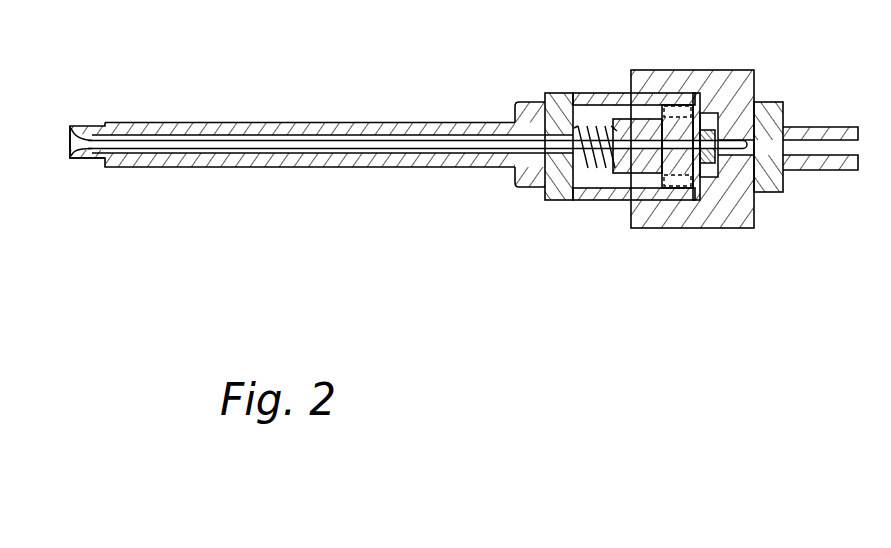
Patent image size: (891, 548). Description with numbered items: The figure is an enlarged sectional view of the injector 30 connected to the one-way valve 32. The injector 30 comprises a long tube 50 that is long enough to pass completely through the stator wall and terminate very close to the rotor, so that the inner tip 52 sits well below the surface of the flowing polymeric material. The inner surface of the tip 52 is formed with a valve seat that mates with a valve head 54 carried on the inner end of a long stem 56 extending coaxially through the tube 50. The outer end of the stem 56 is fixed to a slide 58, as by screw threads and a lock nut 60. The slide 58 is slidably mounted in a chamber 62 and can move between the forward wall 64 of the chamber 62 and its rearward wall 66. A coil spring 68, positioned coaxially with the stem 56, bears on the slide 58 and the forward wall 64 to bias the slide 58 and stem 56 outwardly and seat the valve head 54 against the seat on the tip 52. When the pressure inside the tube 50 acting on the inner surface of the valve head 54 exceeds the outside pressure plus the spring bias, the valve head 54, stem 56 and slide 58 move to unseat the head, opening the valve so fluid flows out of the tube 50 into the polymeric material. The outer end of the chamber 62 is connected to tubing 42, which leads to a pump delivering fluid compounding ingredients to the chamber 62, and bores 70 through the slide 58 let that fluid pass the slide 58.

The injector 30 is at (228, 123).
The one-way valve 32 is at (587, 91).
The tubing 42 is at (823, 127).
The long tube 50 is at (328, 127).
The inner tip 52 is at (70, 158).
The valve head 54 is at (78, 141).
The stem 56 is at (140, 143).
The slide 58 is at (633, 163).
The lock nut 60 is at (732, 70).
The chamber 62 is at (591, 175).
The forward wall 64 is at (577, 199).
The rearward wall 66 is at (701, 172).
The coil spring 68 is at (572, 91).
The bores 70 is at (687, 95).